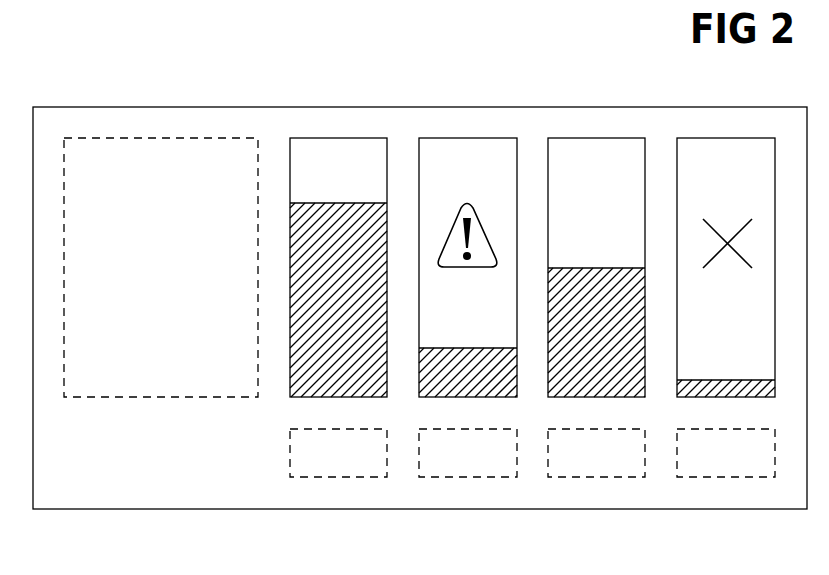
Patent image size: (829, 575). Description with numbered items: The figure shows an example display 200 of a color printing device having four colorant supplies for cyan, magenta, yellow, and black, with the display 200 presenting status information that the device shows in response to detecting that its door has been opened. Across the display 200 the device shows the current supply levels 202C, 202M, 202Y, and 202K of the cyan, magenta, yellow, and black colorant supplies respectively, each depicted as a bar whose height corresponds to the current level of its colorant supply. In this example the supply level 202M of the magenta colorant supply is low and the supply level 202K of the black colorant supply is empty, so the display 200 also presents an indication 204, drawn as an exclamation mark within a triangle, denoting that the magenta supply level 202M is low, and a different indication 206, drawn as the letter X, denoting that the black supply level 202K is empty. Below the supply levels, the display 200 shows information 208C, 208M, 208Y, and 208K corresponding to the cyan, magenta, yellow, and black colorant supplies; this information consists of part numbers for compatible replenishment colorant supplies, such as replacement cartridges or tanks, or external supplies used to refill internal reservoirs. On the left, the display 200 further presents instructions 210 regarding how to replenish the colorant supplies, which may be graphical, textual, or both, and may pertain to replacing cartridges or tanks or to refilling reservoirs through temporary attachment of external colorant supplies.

The display 200 is at (60, 107).
The instructions 210 is at (162, 138).
The supply level of cyan colorant supply 202C is at (342, 138).
The supply level of magenta colorant supply 202M is at (471, 138).
The supply level of yellow colorant supply 202Y is at (596, 138).
The supply level of black colorant supply 202K is at (725, 138).
The indication 204 is at (456, 218).
The indication 206 is at (725, 222).
The information for cyan colorant supply 208C is at (332, 478).
The information for magenta colorant supply 208M is at (462, 478).
The information for yellow colorant supply 208Y is at (592, 478).
The information for black colorant supply 208K is at (720, 478).